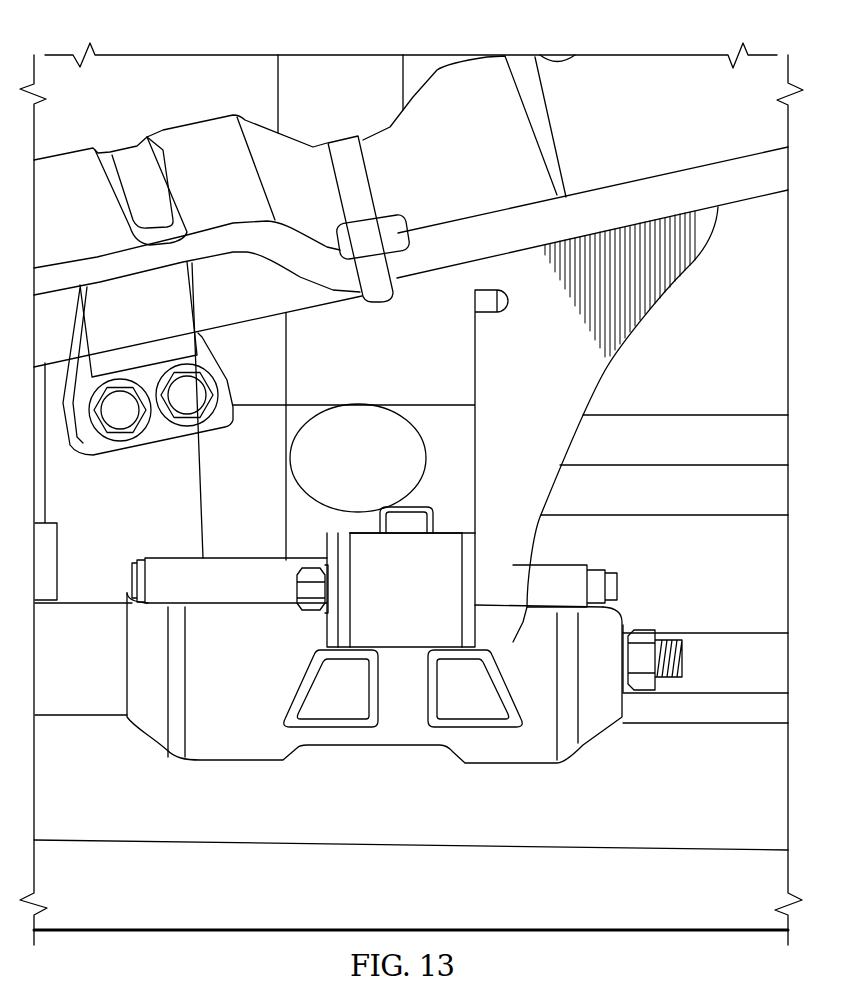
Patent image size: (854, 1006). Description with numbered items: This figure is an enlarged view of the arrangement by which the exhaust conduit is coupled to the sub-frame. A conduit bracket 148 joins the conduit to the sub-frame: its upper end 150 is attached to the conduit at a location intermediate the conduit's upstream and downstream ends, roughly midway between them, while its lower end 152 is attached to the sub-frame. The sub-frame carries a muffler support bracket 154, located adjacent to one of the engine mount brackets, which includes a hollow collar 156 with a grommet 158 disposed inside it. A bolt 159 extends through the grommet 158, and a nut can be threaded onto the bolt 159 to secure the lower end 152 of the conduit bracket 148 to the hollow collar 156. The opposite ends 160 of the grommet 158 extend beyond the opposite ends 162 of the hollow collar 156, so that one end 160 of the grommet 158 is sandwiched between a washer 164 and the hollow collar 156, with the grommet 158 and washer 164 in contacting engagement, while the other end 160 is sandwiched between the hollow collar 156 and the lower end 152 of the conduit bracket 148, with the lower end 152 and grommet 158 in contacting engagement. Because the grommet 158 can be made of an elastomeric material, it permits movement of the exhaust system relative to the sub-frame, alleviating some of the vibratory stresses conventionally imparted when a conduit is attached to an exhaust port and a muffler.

The conduit bracket 148 is at (506, 362).
The upper end 150 is at (700, 267).
The lower end 152 is at (543, 571).
The muffler support bracket 154 is at (403, 765).
The hollow collar 156 is at (403, 636).
The grommet 158 is at (484, 523).
The bolt 159 is at (297, 590).
The opposite ends of the grommet 160 is at (343, 628).
The opposite ends of the hollow collar 162 is at (362, 555).
The washer 164 is at (333, 547).